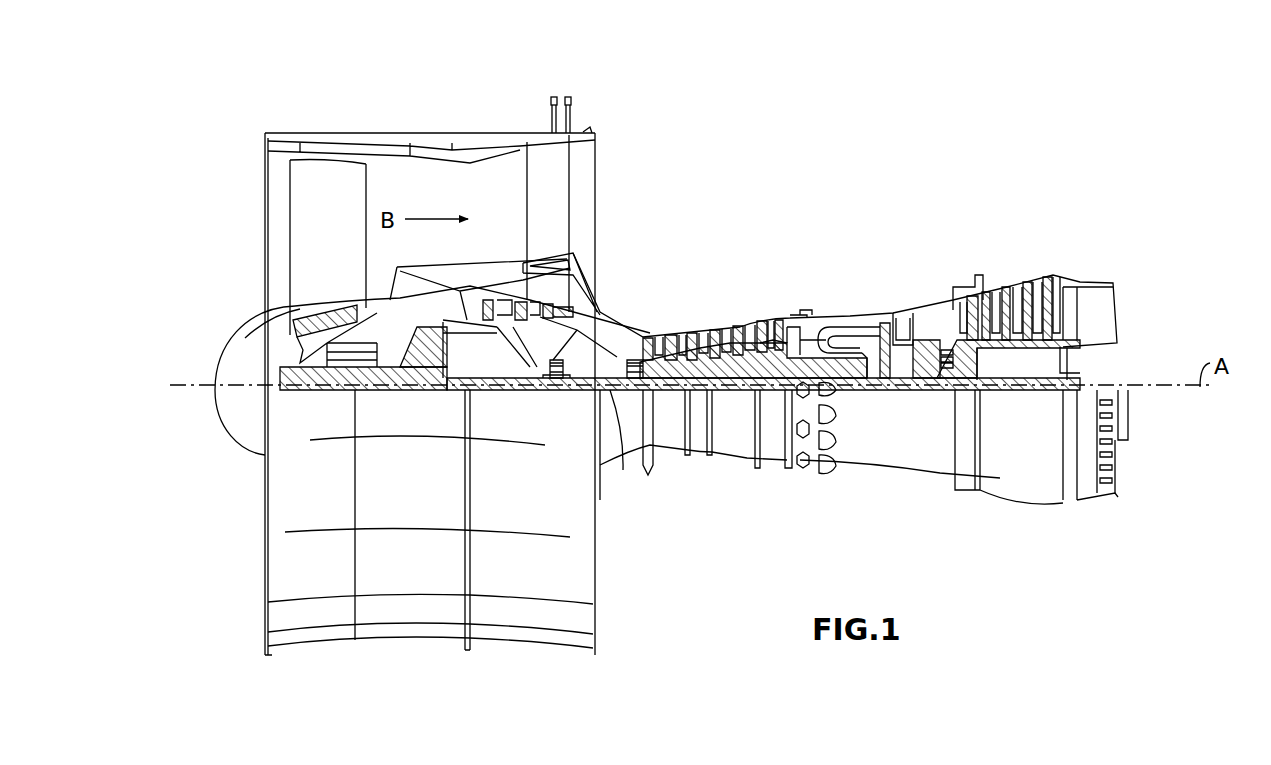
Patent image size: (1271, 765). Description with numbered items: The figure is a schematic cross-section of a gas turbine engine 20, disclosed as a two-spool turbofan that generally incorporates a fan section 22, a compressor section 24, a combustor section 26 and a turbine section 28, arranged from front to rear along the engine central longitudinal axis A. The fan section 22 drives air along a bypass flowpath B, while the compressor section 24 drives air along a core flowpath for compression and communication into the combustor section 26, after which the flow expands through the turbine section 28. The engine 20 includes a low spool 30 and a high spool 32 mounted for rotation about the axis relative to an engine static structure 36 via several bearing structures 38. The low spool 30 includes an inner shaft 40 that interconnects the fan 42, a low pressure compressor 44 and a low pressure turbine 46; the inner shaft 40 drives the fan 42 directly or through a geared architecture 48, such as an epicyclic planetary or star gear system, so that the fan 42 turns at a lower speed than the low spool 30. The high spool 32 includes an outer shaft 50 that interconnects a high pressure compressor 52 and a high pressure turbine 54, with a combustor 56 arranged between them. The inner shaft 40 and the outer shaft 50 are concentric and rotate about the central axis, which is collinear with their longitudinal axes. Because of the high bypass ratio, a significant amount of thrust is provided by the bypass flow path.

The gas turbine engine 20 is at (849, 182).
The fan section 22 is at (364, 128).
The compressor section 24 is at (640, 308).
The combustor section 26 is at (841, 295).
The turbine section 28 is at (973, 262).
The low spool 30 is at (735, 396).
The high spool 32 is at (773, 340).
The engine static structure 36 is at (773, 472).
The bearing structures 38 is at (557, 383).
The inner shaft 40 is at (612, 430).
The fan 42 is at (344, 253).
The low pressure compressor 44 is at (537, 303).
The low pressure turbine 46 is at (1015, 297).
The geared architecture 48 is at (437, 378).
The outer shaft 50 is at (845, 388).
The high pressure compressor 52 is at (712, 350).
The high pressure turbine 54 is at (897, 340).
The combustor 56 is at (840, 340).